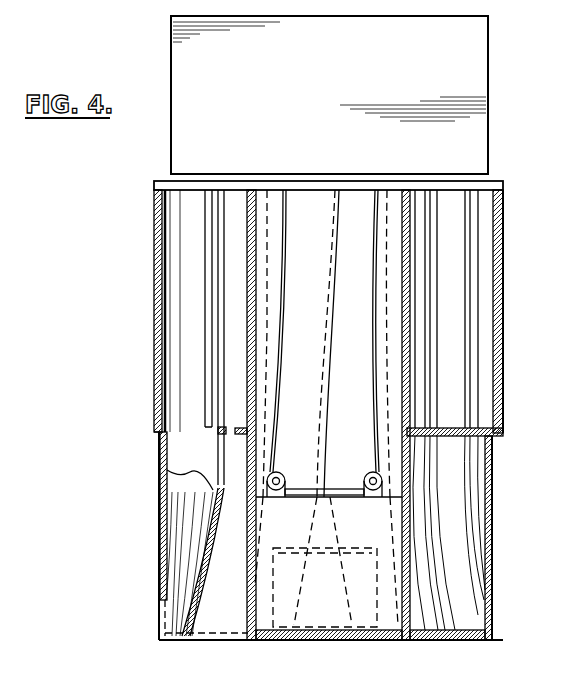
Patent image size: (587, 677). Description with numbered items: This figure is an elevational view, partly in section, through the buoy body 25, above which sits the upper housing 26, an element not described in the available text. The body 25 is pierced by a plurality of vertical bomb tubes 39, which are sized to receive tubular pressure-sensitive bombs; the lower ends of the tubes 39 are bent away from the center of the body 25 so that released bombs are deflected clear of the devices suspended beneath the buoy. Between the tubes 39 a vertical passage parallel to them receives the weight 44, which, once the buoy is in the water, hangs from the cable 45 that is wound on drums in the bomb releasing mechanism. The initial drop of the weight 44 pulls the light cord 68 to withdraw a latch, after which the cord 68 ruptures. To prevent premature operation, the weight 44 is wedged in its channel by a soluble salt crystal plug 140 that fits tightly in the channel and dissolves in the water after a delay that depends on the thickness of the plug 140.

The upper housing 26 is at (488, 140).
The body 25 is at (497, 420).
The cable 45 is at (284, 364).
The light cord 68 is at (326, 431).
The weight 44 is at (323, 548).
The soluble salt crystal plug 140 is at (331, 640).
The bomb tubes 39 is at (179, 574).